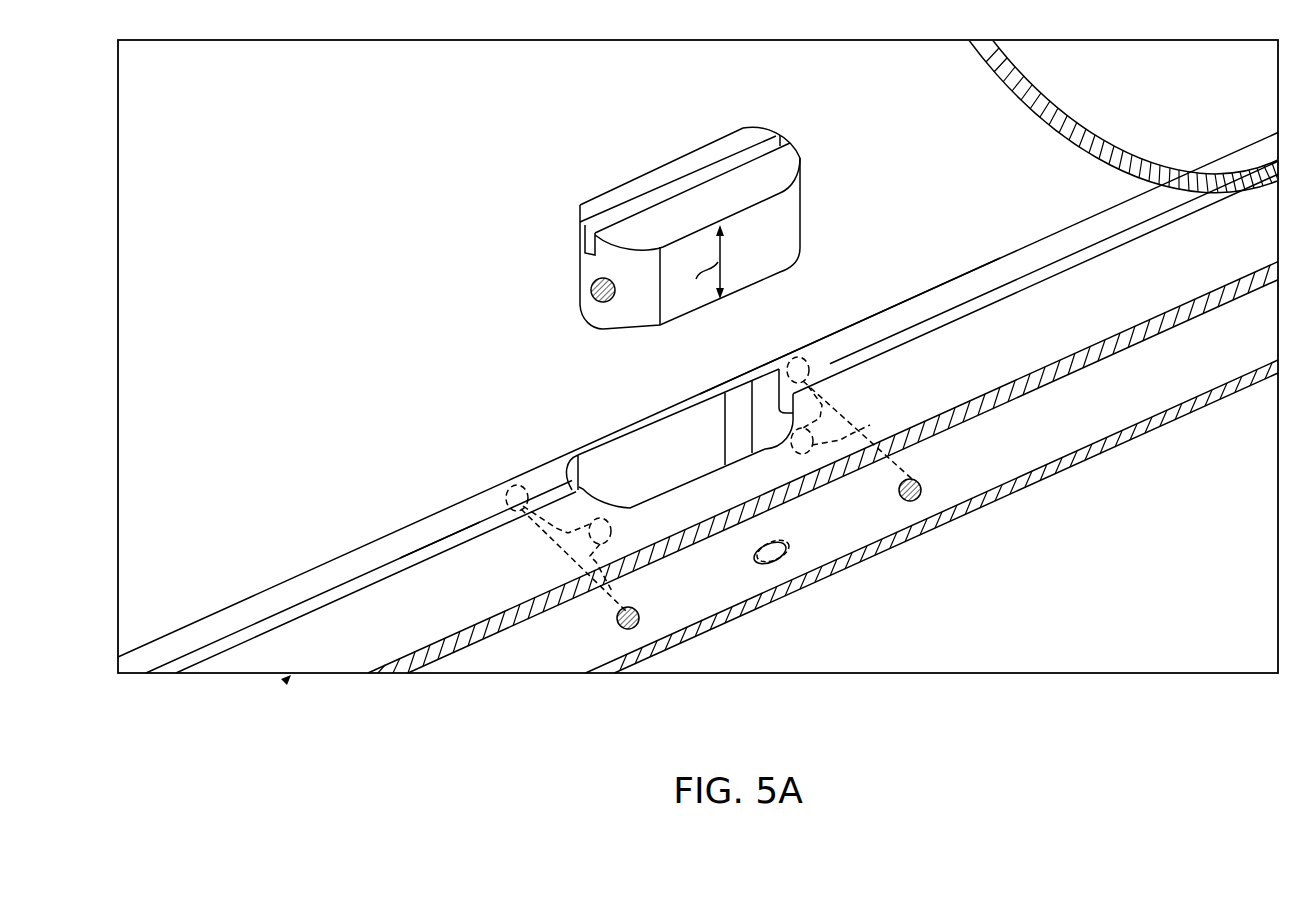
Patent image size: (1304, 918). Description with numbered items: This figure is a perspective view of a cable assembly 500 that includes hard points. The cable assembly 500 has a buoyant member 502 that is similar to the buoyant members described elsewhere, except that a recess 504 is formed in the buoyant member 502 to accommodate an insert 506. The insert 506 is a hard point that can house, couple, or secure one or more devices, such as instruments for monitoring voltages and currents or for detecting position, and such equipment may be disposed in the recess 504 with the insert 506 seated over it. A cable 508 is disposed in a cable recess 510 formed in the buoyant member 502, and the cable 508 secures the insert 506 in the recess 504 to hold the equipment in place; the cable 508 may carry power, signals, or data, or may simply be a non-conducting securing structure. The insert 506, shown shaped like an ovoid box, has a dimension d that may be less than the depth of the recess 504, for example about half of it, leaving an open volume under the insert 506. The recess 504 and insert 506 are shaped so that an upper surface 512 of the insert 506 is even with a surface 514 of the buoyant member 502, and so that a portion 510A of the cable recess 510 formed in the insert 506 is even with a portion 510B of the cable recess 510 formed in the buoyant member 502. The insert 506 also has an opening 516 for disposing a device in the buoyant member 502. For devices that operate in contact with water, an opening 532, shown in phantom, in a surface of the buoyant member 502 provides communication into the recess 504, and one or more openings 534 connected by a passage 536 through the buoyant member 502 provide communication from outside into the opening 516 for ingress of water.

The cable assembly 500 is at (284, 682).
The buoyant member 502 is at (236, 600).
The recess 504 is at (662, 458).
The insert 506 is at (802, 213).
The cable 508 is at (1070, 116).
The cable recess 510 is at (698, 178).
The portion of the cable recess 510A is at (583, 240).
The portion of the cable recess 510B is at (451, 537).
The upper surface 512 is at (757, 137).
The surface 514 is at (832, 347).
The opening 516 is at (592, 284).
The opening 532 is at (788, 549).
The openings 534 is at (798, 360).
The passage 536 is at (850, 410).